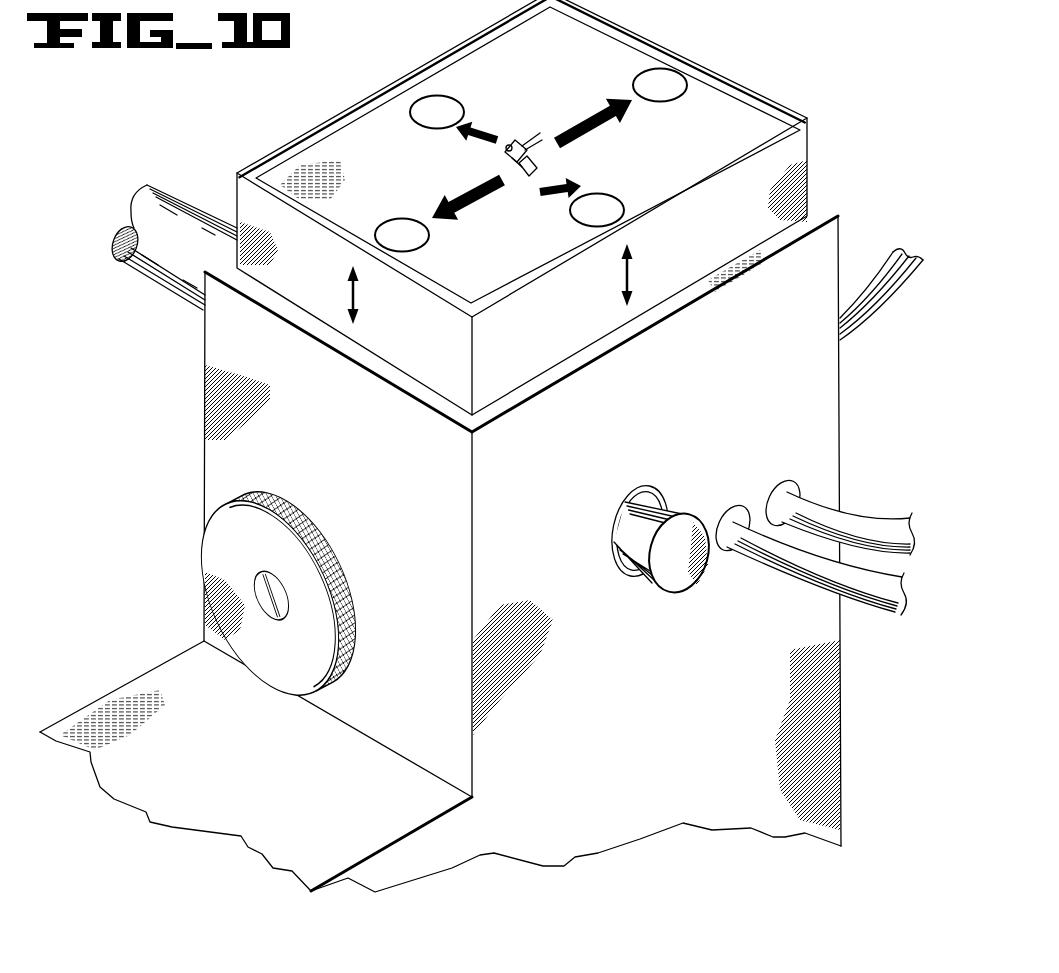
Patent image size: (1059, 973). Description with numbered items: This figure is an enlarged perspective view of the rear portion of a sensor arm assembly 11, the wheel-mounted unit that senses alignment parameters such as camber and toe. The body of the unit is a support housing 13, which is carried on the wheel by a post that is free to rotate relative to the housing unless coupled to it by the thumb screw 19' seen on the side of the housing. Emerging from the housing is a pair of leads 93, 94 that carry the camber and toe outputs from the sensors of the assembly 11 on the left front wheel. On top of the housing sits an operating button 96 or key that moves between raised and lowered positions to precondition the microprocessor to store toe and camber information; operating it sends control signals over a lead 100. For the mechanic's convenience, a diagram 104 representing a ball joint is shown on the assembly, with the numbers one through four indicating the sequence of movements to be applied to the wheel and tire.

The sensor arm assembly 11 is at (134, 602).
The support housing 13 is at (398, 486).
The thumb screw 19' is at (311, 593).
The lead 93 is at (862, 518).
The lead 94 is at (770, 563).
The operating button 96 is at (812, 143).
The lead 100 is at (877, 279).
The diagram 104 is at (515, 137).